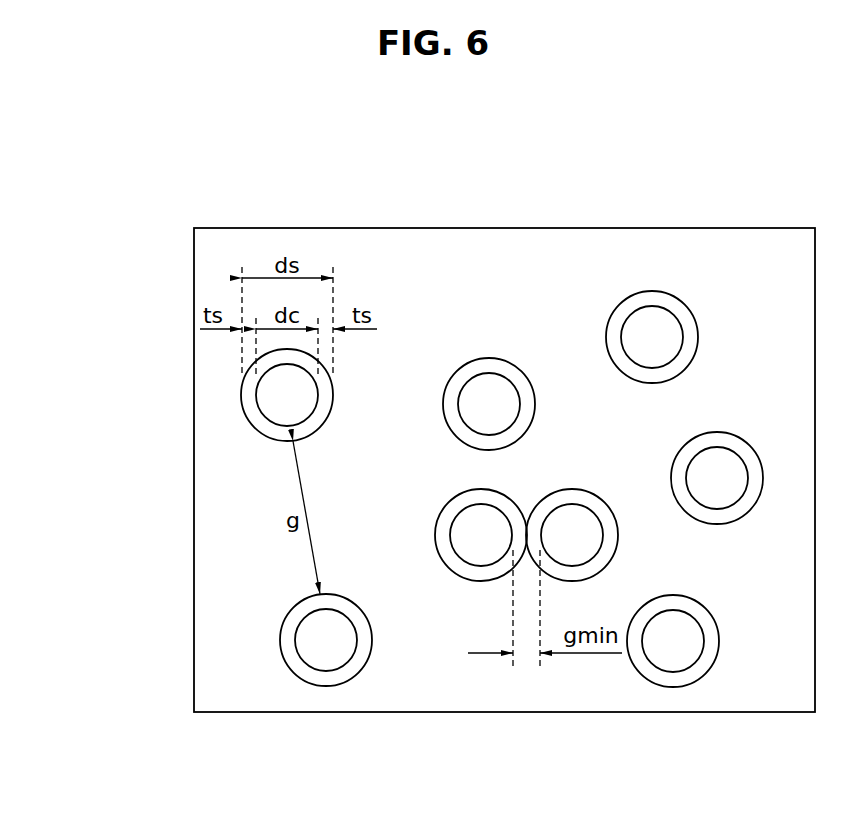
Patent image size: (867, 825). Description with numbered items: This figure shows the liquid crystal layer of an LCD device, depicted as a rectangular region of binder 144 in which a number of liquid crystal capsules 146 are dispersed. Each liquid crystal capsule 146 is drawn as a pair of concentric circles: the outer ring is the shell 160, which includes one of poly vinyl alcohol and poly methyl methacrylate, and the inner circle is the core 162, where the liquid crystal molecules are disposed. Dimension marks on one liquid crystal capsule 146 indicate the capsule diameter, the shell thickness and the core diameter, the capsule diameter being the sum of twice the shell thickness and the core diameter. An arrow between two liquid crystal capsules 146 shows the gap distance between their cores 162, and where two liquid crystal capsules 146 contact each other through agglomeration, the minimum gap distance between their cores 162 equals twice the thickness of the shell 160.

The binder 144 is at (461, 258).
The liquid crystal capsule 146 is at (88, 405).
The shell 160 is at (247, 408).
The core 162 is at (279, 423).